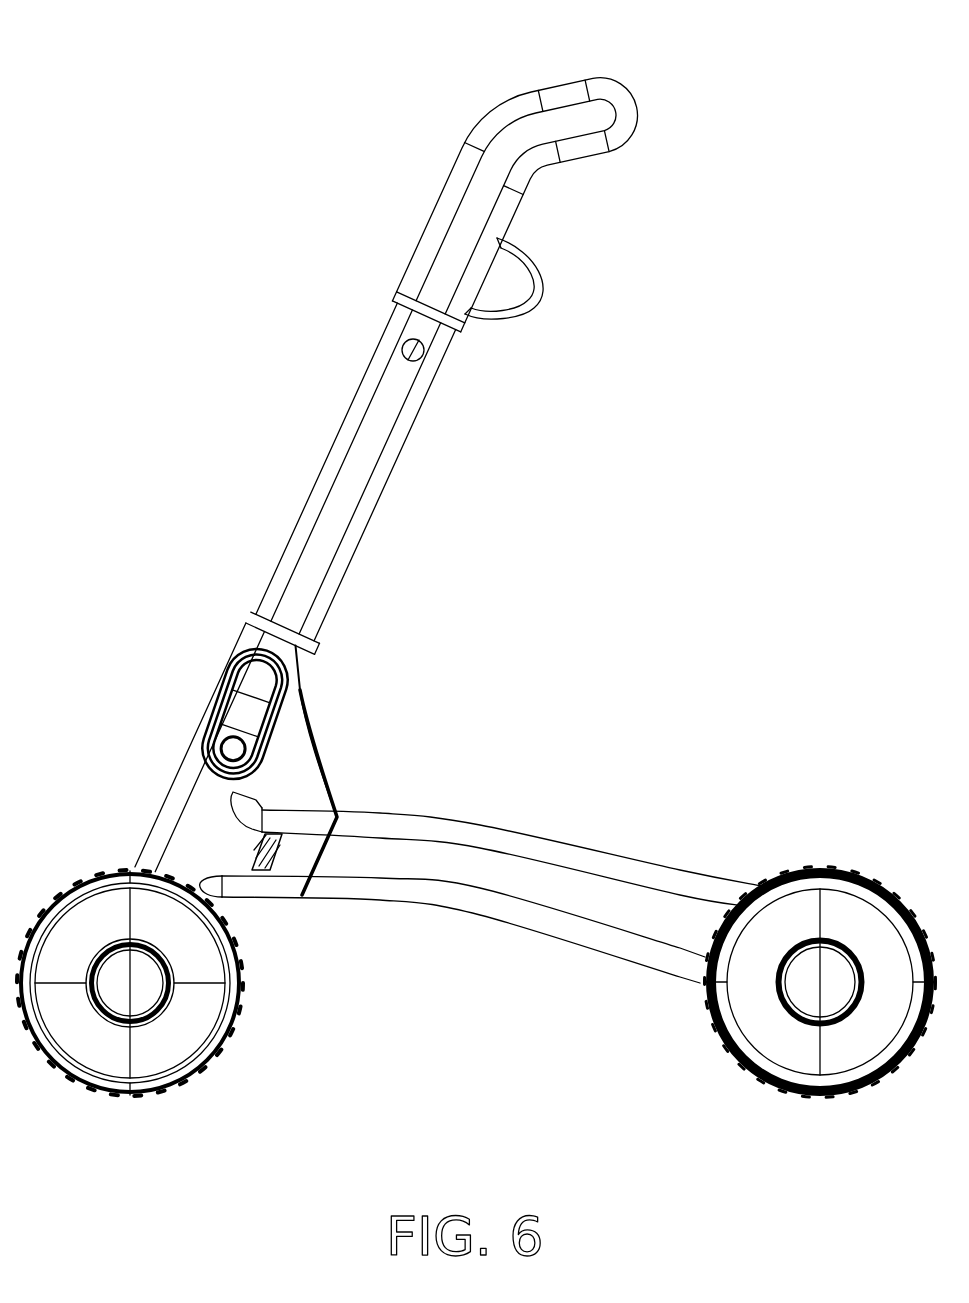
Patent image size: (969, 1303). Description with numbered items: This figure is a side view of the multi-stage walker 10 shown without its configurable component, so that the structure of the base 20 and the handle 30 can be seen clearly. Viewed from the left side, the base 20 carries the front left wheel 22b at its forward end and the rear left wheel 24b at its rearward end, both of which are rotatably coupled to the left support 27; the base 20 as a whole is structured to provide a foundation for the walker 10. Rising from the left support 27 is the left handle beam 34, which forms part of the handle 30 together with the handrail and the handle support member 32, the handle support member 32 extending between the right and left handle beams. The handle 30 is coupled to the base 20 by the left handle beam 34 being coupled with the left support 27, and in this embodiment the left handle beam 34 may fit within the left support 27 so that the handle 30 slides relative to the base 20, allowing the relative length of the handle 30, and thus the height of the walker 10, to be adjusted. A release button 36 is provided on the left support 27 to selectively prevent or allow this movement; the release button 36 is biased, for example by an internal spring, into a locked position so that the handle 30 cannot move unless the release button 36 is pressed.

The multi-stage walker 10 is at (200, 1157).
The base 20 is at (420, 969).
The front left wheel 22b is at (222, 1040).
The rear left wheel 24b is at (852, 872).
The left support 27 is at (300, 662).
The handle 30 is at (760, 157).
The handle support member 32 is at (538, 298).
The left handle beam 34 is at (633, 97).
The release button 36 is at (290, 709).